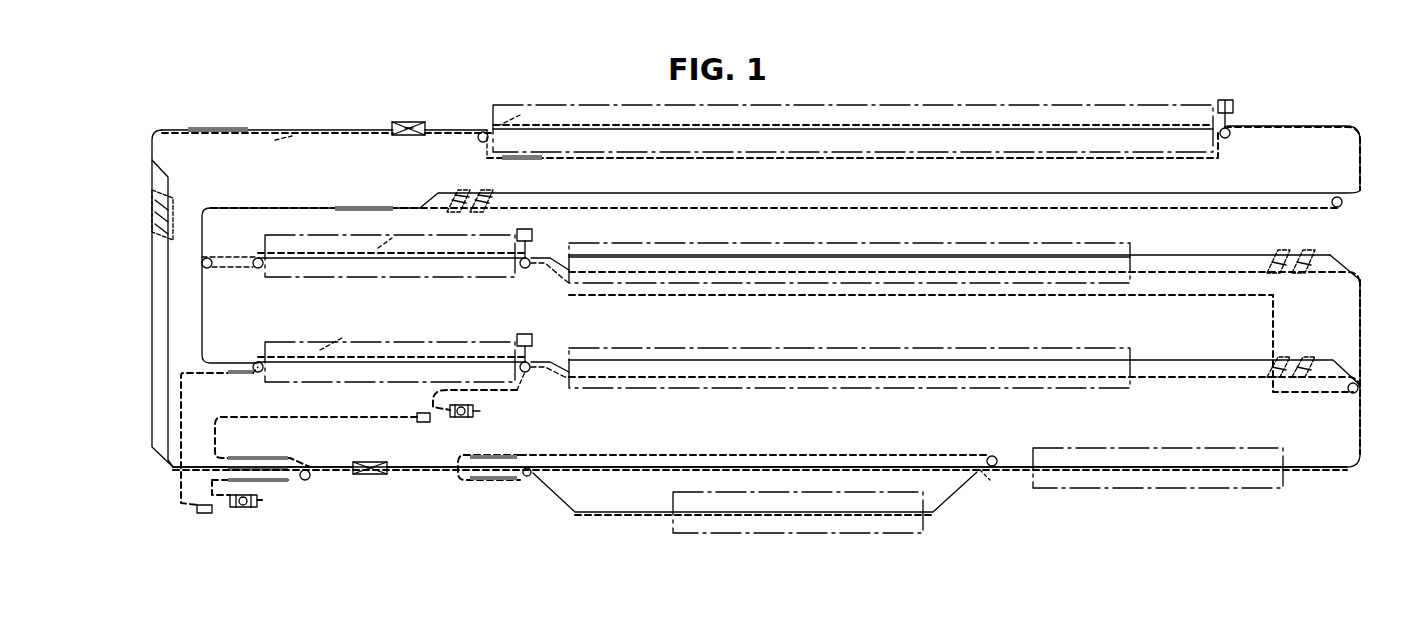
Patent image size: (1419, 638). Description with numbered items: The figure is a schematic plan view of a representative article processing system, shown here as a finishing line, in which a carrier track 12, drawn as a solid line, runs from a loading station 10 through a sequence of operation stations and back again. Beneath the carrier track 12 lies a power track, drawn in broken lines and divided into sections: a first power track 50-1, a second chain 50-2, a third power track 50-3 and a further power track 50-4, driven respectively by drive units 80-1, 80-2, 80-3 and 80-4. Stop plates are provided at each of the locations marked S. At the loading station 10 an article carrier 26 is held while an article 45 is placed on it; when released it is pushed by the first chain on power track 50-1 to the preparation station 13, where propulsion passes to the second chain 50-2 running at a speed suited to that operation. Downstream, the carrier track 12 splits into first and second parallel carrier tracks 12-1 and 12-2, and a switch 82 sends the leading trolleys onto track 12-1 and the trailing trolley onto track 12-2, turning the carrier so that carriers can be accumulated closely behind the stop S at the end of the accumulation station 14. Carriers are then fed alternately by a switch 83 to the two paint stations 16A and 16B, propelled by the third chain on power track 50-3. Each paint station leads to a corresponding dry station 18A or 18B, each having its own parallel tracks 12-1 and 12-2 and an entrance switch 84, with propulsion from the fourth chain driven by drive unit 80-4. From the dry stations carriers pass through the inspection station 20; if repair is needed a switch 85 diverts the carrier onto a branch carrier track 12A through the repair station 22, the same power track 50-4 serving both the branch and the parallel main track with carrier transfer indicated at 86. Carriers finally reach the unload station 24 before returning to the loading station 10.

The loading station 10 is at (405, 120).
The carrier track 12 is at (325, 128).
The first parallel carrier track 12-1 is at (1190, 192).
The second parallel carrier track 12-2 is at (1302, 192).
The branch carrier track 12A is at (660, 510).
The preparation station 13 is at (907, 105).
The accumulation station 14 is at (903, 192).
The first paint station 16A is at (410, 278).
The second paint station 16B is at (490, 342).
The first dry station 18A is at (1015, 238).
The second dry station 18B is at (1012, 338).
The inspection station 20 is at (1178, 448).
The repair station 22 is at (833, 492).
The unload station 24 is at (375, 460).
The article carrier 26 is at (406, 138).
The article 45 is at (422, 121).
The first power track 50-1 is at (276, 150).
The second chain 50-2 is at (536, 100).
The third power track 50-3 is at (372, 240).
The power track 50-4 is at (798, 462).
The first drive unit 80-1 is at (210, 515).
The second drive unit 80-2 is at (1233, 103).
The third drive unit 80-3 is at (534, 238).
The fourth drive unit 80-4 is at (430, 420).
The switch 82 is at (1343, 205).
The switch 83 is at (204, 255).
The entrance switch 84 is at (562, 280).
The switch 85 is at (978, 480).
The carrier transfer 86 is at (1002, 458).
The stop location S is at (386, 133).